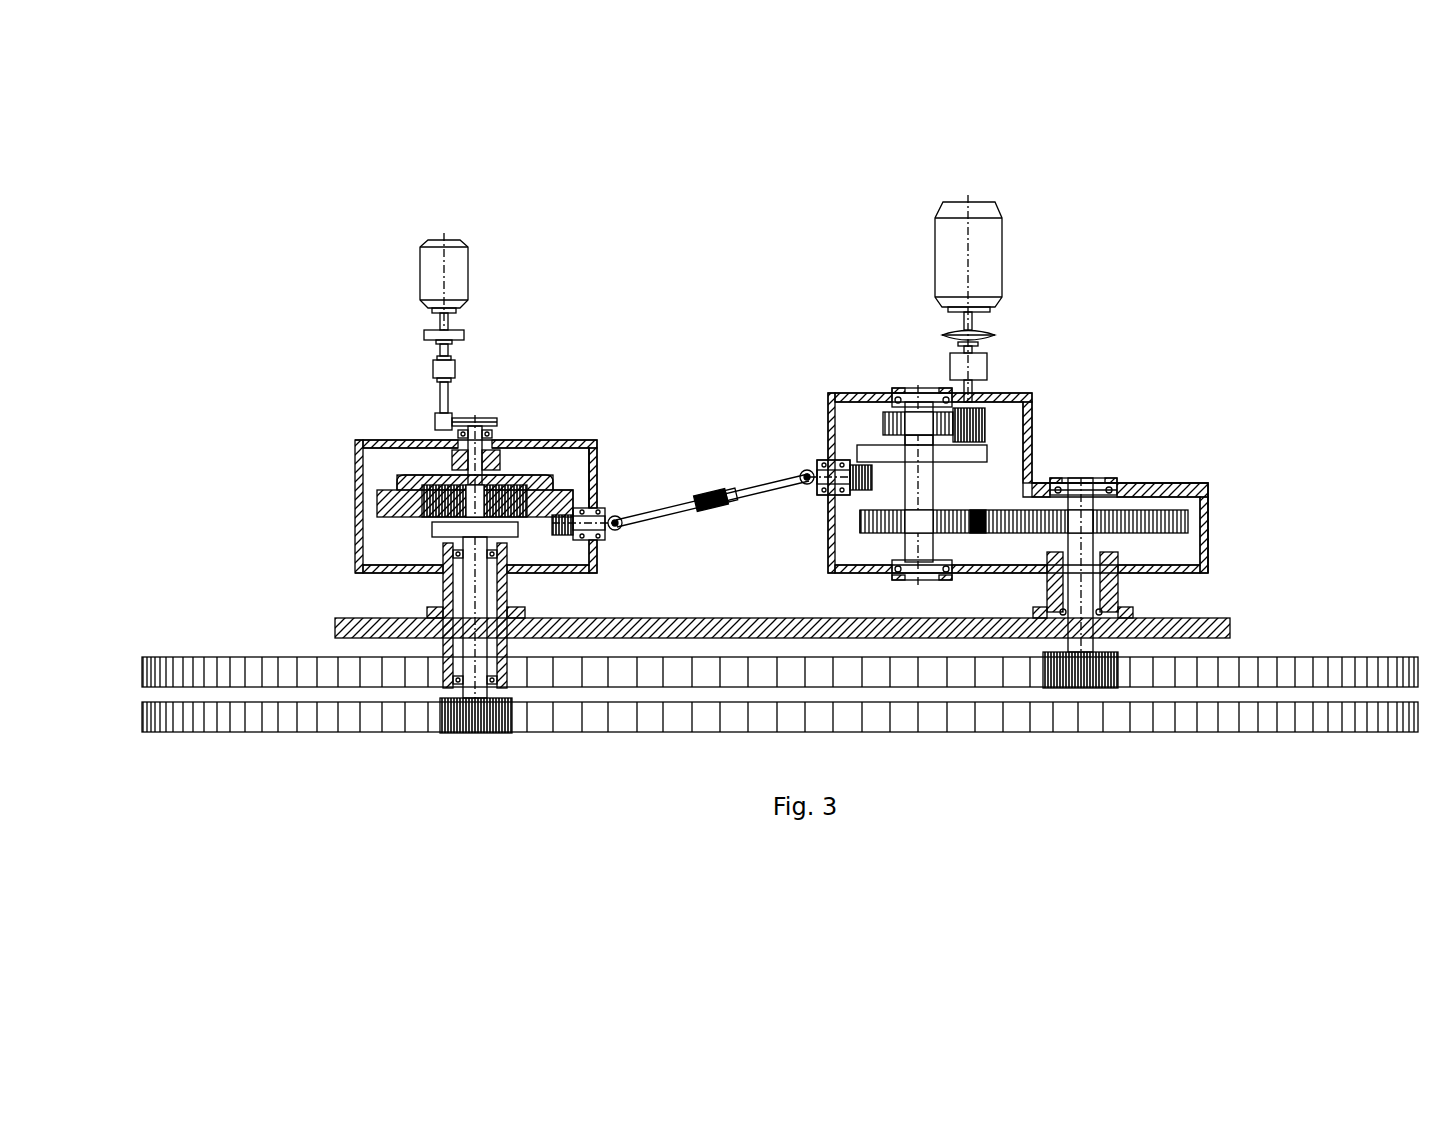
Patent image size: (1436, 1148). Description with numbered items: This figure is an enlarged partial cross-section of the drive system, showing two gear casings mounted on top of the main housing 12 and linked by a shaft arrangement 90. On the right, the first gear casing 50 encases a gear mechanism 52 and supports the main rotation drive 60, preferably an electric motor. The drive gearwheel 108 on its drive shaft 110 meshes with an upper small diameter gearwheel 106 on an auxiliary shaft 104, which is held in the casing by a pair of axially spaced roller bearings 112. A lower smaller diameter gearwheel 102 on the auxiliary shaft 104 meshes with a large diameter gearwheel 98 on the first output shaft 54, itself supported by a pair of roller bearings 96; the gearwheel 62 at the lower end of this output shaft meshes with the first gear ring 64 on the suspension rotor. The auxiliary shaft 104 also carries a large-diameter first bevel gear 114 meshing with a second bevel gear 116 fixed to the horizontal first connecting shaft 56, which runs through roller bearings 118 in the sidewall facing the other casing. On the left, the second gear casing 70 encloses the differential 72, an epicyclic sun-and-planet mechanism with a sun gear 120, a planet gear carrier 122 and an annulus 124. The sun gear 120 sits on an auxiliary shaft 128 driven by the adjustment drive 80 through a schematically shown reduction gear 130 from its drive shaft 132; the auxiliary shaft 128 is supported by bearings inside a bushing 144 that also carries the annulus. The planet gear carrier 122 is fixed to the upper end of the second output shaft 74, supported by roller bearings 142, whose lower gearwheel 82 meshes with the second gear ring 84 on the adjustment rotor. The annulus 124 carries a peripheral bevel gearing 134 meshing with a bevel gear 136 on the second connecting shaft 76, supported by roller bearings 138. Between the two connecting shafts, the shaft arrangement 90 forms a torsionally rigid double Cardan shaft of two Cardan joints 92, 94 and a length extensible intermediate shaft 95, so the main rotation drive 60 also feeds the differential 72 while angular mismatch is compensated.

The main housing 12 is at (1222, 630).
The first gear casing 50 is at (1185, 483).
The gear mechanism 52 is at (851, 537).
The first output shaft 54 is at (1090, 585).
The first connecting shaft 56 is at (822, 463).
The main rotation drive 60 is at (992, 242).
The gearwheel 62 is at (1072, 690).
The first gear ring 64 is at (1360, 660).
The second gear casing 70 is at (385, 440).
The differential gear 72 is at (532, 537).
The second output shaft 74 is at (478, 602).
The second connecting shaft 76 is at (550, 492).
The adjustment drive 80 is at (465, 270).
The gearwheel 82 is at (460, 733).
The second gear ring 84 is at (1373, 728).
The shaft arrangement 90 is at (704, 444).
The Cardan joint 92 is at (800, 472).
The Cardan joint 94 is at (619, 515).
The length extensible intermediate shaft 95 is at (672, 505).
The roller bearings 96 is at (1100, 478).
The large diameter gearwheel 98 is at (1172, 522).
The lower smaller diameter gearwheel 102 is at (880, 528).
The auxiliary shaft 104 is at (925, 490).
The upper small diameter gearwheel 106 is at (883, 423).
The drive gearwheel 108 is at (985, 427).
The drive shaft 110 is at (975, 320).
The roller bearings 112 is at (928, 388).
The first bevel gear 114 is at (985, 453).
The second bevel gear 116 is at (833, 452).
The roller bearings 118 is at (824, 493).
The sun gear 120 is at (455, 533).
The planet gear carrier 122 is at (440, 510).
The annulus 124 is at (380, 487).
The auxiliary shaft 128 is at (486, 452).
The reduction gear 130 is at (468, 400).
The drive shaft 132 is at (447, 317).
The peripheral bevel gearing 134 is at (392, 496).
The bevel gear 136 is at (593, 480).
The roller bearings 138 is at (585, 540).
The roller bearings 142 is at (445, 576).
The bushing 144 is at (510, 428).